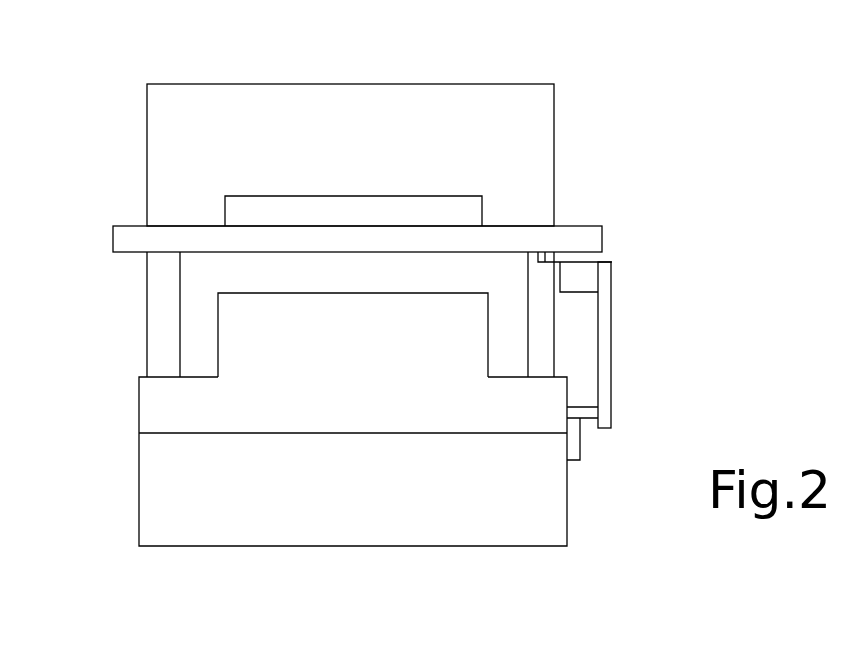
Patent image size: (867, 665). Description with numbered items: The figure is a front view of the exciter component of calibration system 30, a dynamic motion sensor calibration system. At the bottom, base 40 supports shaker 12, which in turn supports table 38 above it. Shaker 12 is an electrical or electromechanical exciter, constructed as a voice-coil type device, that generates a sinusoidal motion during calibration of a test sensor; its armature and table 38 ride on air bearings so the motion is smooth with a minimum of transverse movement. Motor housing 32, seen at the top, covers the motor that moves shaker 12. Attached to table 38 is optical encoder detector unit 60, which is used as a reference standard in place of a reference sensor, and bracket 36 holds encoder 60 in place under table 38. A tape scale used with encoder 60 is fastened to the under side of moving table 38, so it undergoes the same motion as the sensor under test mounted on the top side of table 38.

The shaker 12 is at (168, 415).
The calibration system 30 is at (617, 184).
The motor housing 32 is at (535, 120).
The bracket 36 is at (612, 352).
The table 38 is at (129, 227).
The base 40 is at (512, 508).
The optical encoder detector unit 60 is at (605, 254).